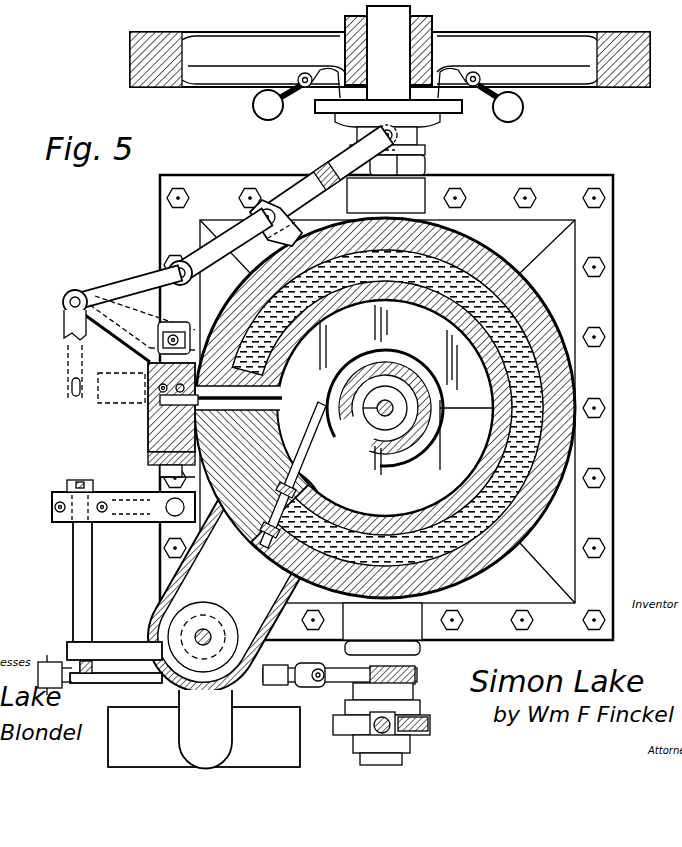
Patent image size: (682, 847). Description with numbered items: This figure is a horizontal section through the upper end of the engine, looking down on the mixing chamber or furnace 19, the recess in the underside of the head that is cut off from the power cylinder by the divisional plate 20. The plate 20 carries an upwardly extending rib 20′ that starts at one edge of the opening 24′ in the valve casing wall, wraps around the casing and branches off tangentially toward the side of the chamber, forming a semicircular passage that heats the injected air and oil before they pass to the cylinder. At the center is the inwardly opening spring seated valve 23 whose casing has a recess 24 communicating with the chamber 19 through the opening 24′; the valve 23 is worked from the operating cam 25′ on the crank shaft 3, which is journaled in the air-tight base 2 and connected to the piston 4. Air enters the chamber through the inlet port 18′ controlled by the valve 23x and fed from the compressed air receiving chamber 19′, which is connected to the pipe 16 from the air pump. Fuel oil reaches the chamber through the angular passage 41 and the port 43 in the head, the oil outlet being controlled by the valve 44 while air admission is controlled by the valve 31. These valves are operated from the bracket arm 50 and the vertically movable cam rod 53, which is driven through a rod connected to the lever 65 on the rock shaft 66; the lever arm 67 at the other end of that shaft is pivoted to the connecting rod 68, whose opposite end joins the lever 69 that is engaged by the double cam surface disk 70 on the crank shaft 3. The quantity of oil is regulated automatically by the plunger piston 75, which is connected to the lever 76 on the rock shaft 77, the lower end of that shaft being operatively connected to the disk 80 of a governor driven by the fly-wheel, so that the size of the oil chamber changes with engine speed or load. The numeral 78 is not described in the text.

The air-tight base 2 is at (562, 303).
The crank shaft 3 is at (390, 66).
The piston 4 is at (616, 412).
The pipe 16 is at (205, 729).
The air inlet port 18′ is at (302, 438).
The mixing chamber or furnace 19 is at (490, 270).
The compressed air receiving chamber 19′ is at (240, 585).
The divisional plate 20 is at (325, 355).
The rib 20′ is at (416, 360).
The valve 23 is at (400, 392).
The valve 23x is at (332, 497).
The recess 24 is at (420, 428).
The opening 24′ is at (355, 440).
The operating cam 25′ is at (405, 745).
The valve 31 is at (210, 330).
The angular passage 41 is at (152, 425).
The port 43 is at (268, 398).
The valve 44 is at (157, 387).
The bracket arm 50 is at (147, 458).
The cam rod 53 is at (162, 482).
The lever 65 is at (72, 484).
The rock shaft 66 is at (74, 572).
The lever arm 67 is at (47, 655).
The connecting rod 68 is at (128, 684).
The lever 69 is at (303, 685).
The double cam surface disk 70 is at (358, 650).
The plunger piston 75 is at (204, 737).
The lever 76 is at (66, 328).
The rock shaft 77 is at (68, 300).
The annular channel 78 is at (557, 375).
The disk 80 is at (344, 124).